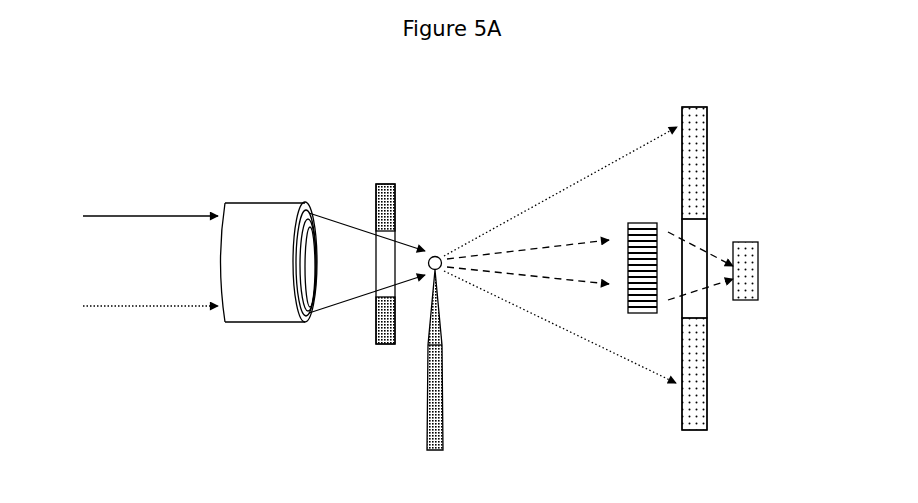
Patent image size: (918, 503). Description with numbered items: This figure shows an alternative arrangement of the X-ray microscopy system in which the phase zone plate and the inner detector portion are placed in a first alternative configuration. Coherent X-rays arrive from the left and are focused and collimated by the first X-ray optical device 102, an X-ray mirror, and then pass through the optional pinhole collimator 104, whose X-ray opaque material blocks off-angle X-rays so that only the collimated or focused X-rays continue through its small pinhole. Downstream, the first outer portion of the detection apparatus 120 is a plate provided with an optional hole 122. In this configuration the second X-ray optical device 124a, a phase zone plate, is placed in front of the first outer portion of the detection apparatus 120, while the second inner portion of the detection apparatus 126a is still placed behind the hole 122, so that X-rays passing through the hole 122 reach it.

The first X-ray optical device 102 is at (280, 197).
The pinhole collimator 104 is at (389, 175).
The first outer portion of the detection apparatus 120 is at (683, 97).
The hole 122 is at (710, 235).
The second X-ray optical device 124a is at (641, 222).
The second inner portion of the detection apparatus 126a is at (770, 258).